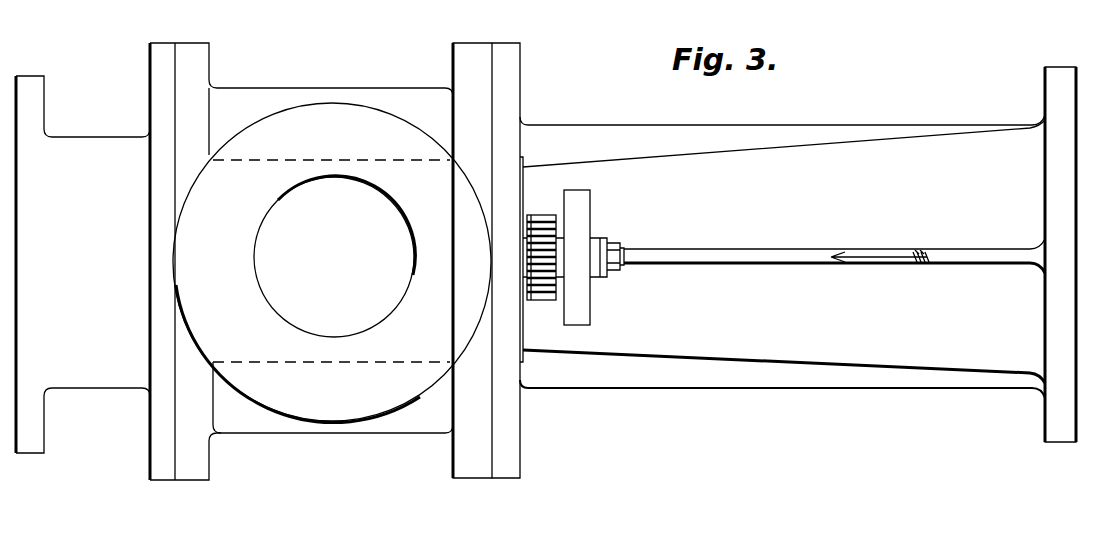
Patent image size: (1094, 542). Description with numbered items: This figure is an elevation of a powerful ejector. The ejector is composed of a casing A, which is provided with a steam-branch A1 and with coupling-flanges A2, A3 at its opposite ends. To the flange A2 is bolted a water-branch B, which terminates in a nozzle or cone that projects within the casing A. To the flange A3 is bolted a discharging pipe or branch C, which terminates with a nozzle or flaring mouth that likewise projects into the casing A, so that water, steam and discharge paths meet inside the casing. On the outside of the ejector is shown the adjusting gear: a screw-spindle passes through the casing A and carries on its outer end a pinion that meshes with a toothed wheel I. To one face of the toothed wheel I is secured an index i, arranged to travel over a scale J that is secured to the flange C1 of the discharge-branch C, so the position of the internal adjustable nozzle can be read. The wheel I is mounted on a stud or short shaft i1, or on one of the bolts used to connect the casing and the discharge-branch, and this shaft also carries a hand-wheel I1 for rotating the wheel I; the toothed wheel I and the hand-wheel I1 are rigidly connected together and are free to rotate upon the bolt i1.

The casing A is at (332, 246).
The steam-branch A1 is at (334, 256).
The coupling-flange A2 is at (195, 261).
The coupling-flange A3 is at (455, 259).
The water-branch B is at (83, 264).
The discharging pipe or branch C is at (798, 254).
The flange of the discharge-branch C1 is at (506, 260).
The scale J is at (524, 259).
The toothed wheel I is at (541, 246).
The hand-wheel I1 is at (577, 257).
The index i is at (528, 300).
The stud or short shaft i1 is at (623, 250).